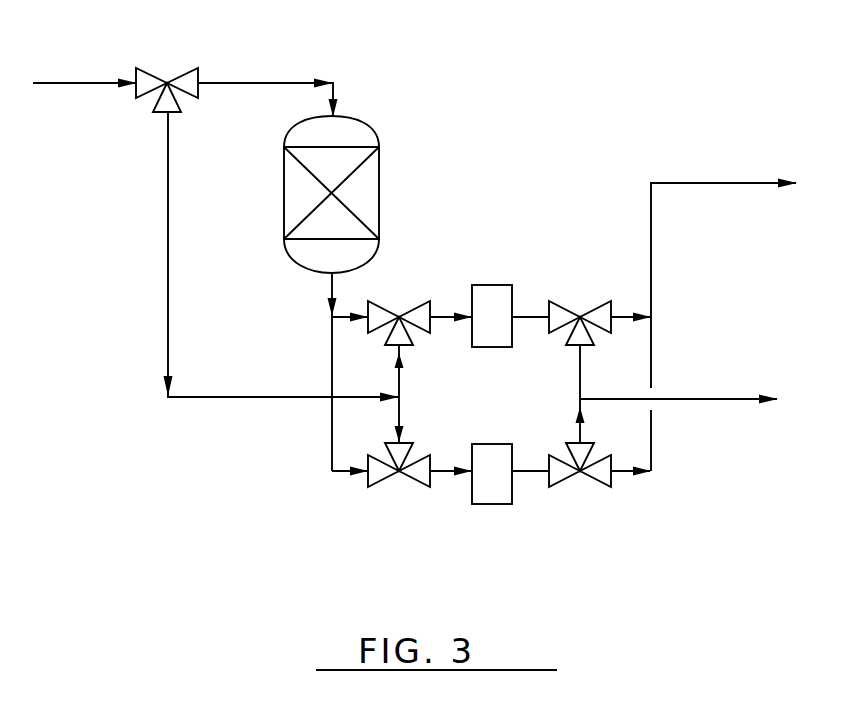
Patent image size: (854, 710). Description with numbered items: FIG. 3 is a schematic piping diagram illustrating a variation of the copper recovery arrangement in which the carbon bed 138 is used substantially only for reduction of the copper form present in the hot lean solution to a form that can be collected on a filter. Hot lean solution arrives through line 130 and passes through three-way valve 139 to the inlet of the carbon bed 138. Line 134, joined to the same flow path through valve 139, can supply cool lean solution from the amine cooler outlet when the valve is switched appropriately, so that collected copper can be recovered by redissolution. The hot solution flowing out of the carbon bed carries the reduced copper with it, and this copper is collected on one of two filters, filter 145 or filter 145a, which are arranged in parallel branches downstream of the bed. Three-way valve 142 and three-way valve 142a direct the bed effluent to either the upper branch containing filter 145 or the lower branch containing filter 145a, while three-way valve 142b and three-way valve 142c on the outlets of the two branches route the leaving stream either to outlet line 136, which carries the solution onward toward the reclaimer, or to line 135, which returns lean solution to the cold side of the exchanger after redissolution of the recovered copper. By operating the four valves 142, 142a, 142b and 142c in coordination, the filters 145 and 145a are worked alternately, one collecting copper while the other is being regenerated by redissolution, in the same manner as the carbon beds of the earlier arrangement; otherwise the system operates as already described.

The line 130 is at (279, 82).
The line 134 is at (168, 333).
The line 135 is at (705, 399).
The outlet line 136 is at (743, 183).
The carbon bed 138 is at (380, 180).
The three-way valve 139 is at (152, 70).
The three-way valve 142 is at (430, 285).
The three-way valve 142a is at (414, 487).
The three-way valve 142b is at (612, 282).
The three-way valve 142c is at (596, 487).
The filter 145 is at (520, 248).
The filter 145a is at (522, 402).